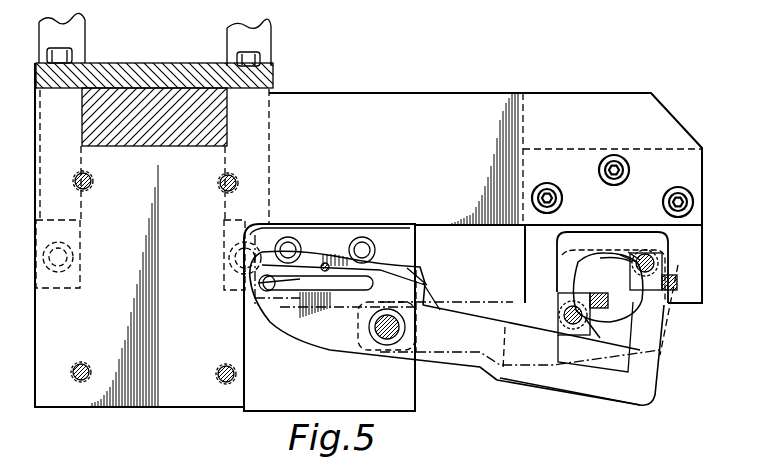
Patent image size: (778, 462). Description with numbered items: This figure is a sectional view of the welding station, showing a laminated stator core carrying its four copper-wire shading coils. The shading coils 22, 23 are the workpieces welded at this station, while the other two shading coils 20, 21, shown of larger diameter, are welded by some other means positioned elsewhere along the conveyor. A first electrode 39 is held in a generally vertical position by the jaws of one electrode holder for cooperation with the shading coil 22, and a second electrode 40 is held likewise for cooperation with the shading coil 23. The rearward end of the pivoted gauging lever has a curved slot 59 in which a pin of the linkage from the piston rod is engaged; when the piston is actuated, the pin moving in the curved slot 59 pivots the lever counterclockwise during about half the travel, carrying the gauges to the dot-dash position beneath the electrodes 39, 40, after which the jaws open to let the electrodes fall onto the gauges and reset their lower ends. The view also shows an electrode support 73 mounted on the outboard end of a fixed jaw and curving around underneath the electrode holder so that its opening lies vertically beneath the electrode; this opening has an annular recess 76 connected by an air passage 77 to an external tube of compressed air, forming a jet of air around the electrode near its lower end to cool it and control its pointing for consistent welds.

The shading coil 20 is at (604, 252).
The shading coil 21 is at (598, 328).
The shading coil 22 is at (652, 258).
The shading coil 23 is at (575, 352).
The first electrode 39 is at (636, 258).
The second electrode 40 is at (565, 325).
The curved slot 59 is at (327, 265).
The electrode support 73 is at (602, 287).
The annular recess 76 is at (630, 270).
The air passage 77 is at (677, 282).